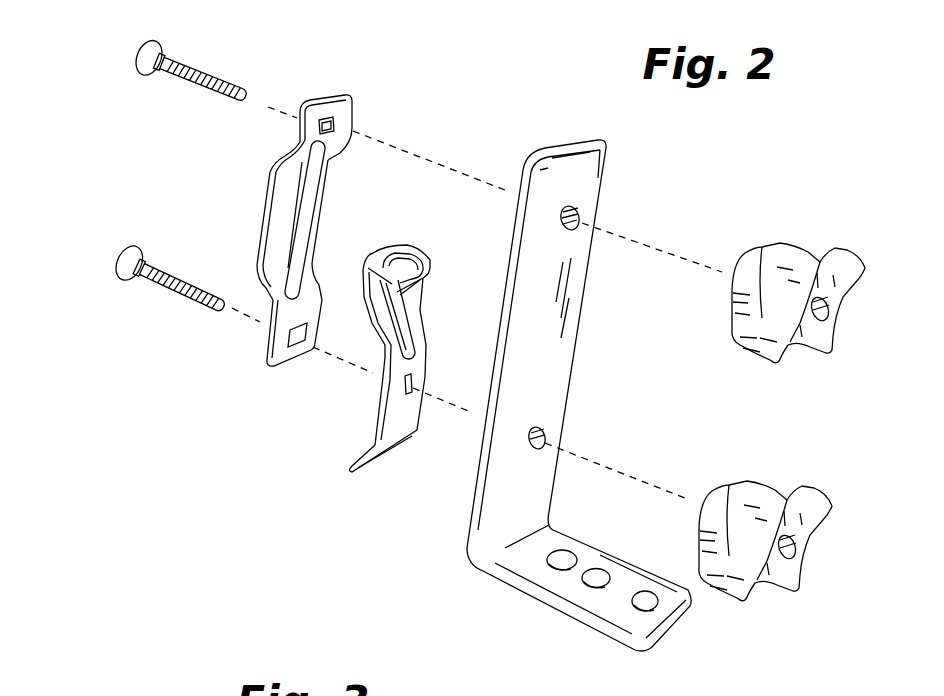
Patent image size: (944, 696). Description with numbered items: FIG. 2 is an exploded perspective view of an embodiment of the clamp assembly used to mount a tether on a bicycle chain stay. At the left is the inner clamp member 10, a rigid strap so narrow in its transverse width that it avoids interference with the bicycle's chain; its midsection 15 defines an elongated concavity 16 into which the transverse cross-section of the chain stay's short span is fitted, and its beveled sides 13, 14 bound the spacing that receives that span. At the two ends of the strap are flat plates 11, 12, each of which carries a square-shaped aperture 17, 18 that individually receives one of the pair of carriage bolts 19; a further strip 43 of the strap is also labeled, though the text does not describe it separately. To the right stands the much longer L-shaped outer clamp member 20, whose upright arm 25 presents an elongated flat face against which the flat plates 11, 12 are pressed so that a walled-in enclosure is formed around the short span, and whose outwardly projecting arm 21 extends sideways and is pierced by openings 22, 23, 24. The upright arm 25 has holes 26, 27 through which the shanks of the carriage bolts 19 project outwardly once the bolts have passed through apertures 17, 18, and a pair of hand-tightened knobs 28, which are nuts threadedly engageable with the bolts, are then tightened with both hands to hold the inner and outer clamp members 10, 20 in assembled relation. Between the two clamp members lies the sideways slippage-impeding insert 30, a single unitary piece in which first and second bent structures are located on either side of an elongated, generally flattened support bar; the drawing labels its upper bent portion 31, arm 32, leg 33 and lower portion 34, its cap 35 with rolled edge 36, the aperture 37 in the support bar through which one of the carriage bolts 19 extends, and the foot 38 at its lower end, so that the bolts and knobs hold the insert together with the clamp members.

The inner clamp member 10 is at (286, 231).
The flat plate 11 is at (350, 105).
The flat plate 12 is at (265, 358).
The beveled side 13 is at (335, 152).
The beveled side 14 is at (275, 293).
The midsection 15 is at (283, 183).
The elongated concavity 16 is at (303, 228).
The square-shaped aperture 17 is at (327, 117).
The square-shaped aperture 18 is at (300, 345).
The carriage bolt 19 is at (182, 83).
The right strip 43 is at (318, 170).
The L-shaped outer clamp member 20 is at (578, 414).
The outwardly projecting arm 21 is at (617, 570).
The hole 22 is at (550, 563).
The hole 23 is at (595, 587).
The hole 24 is at (653, 605).
The upright arm 25 is at (570, 313).
The hole 26 is at (580, 217).
The hole 27 is at (541, 432).
The knob 28 is at (757, 346).
The clip 30 is at (396, 363).
The upper portion of clip 31 is at (353, 277).
The arm 32 is at (410, 320).
The leg 33 is at (363, 460).
The lower leg portion 34 is at (414, 407).
The cap 35 is at (428, 268).
The rolled edge 36 is at (397, 245).
The aperture 37 is at (411, 383).
The foot 38 is at (388, 453).